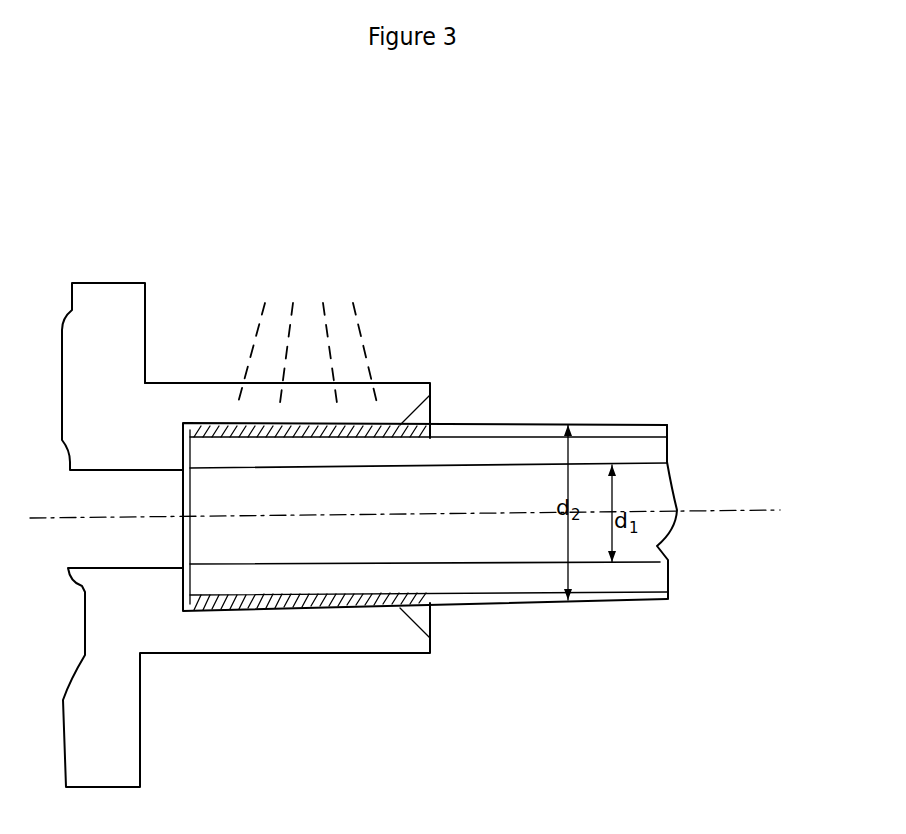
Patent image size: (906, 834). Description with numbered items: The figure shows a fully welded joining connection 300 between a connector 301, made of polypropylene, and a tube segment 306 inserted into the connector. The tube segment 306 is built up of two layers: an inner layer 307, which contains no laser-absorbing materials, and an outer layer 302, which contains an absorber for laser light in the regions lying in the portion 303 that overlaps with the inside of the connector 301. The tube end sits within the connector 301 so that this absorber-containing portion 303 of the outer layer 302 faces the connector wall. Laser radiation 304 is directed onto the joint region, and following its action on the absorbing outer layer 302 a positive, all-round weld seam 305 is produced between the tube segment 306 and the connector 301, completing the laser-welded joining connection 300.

The joining connection 300 is at (594, 271).
The connector 301 is at (278, 638).
The outer layer 302 is at (523, 602).
The portion 303 is at (430, 613).
The laser radiation 304 is at (303, 300).
The weld seam 305 is at (355, 424).
The tube segment 306 is at (675, 471).
The inner layer 307 is at (645, 452).